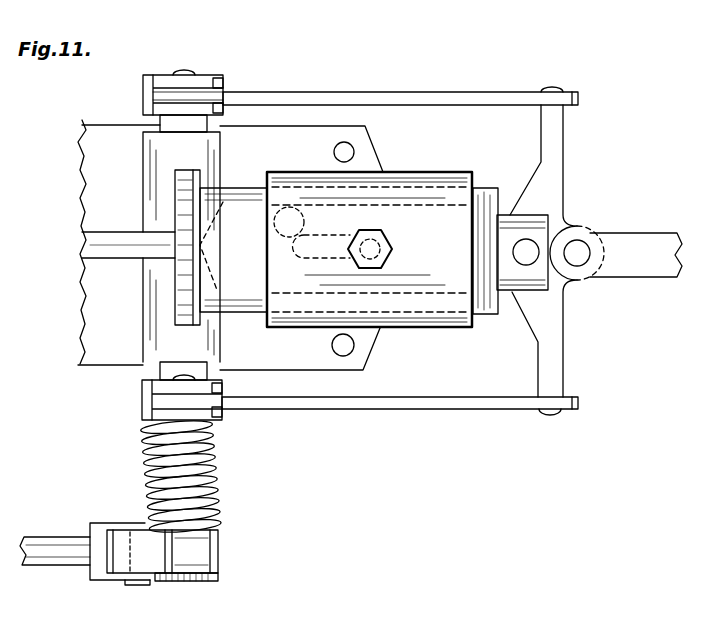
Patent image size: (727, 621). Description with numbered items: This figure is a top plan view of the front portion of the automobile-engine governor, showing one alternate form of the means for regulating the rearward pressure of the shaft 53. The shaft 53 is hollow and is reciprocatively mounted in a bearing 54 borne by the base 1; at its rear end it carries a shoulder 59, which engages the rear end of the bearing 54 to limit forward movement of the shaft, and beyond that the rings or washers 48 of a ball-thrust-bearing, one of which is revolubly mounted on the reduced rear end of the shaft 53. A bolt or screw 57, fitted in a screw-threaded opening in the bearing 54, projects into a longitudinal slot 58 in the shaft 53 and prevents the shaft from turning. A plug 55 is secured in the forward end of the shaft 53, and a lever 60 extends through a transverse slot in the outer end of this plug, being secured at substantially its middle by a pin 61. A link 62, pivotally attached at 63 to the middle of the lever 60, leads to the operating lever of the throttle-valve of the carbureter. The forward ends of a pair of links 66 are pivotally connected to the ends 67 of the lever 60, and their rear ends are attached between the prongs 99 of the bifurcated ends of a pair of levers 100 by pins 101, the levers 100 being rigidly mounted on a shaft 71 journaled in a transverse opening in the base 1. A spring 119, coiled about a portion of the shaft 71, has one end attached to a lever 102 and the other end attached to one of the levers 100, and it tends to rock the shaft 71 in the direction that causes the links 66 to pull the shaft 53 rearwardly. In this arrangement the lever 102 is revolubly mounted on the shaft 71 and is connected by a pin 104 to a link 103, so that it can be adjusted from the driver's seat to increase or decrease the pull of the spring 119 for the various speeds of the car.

The base 1 is at (82, 189).
The rings or washers 48 is at (187, 268).
The shaft 53 is at (233, 250).
The bearing 54 is at (382, 249).
The plug 55 is at (533, 217).
The bolt or screw 57 is at (392, 252).
The longitudinal slot 58 is at (320, 256).
The shoulder 59 is at (202, 178).
The lever 60 is at (524, 269).
The pin 61 is at (526, 258).
The link 62 is at (636, 255).
The pivot 63 is at (578, 252).
The links 66 is at (422, 92).
The ends of the lever 67 is at (555, 88).
The shaft 71 is at (195, 533).
The prongs 99 is at (222, 100).
The levers 100 is at (143, 96).
The pins 101 is at (186, 76).
The lever 102 is at (160, 557).
The link 103 is at (60, 557).
The pin 104 is at (140, 527).
The spring 119 is at (212, 478).